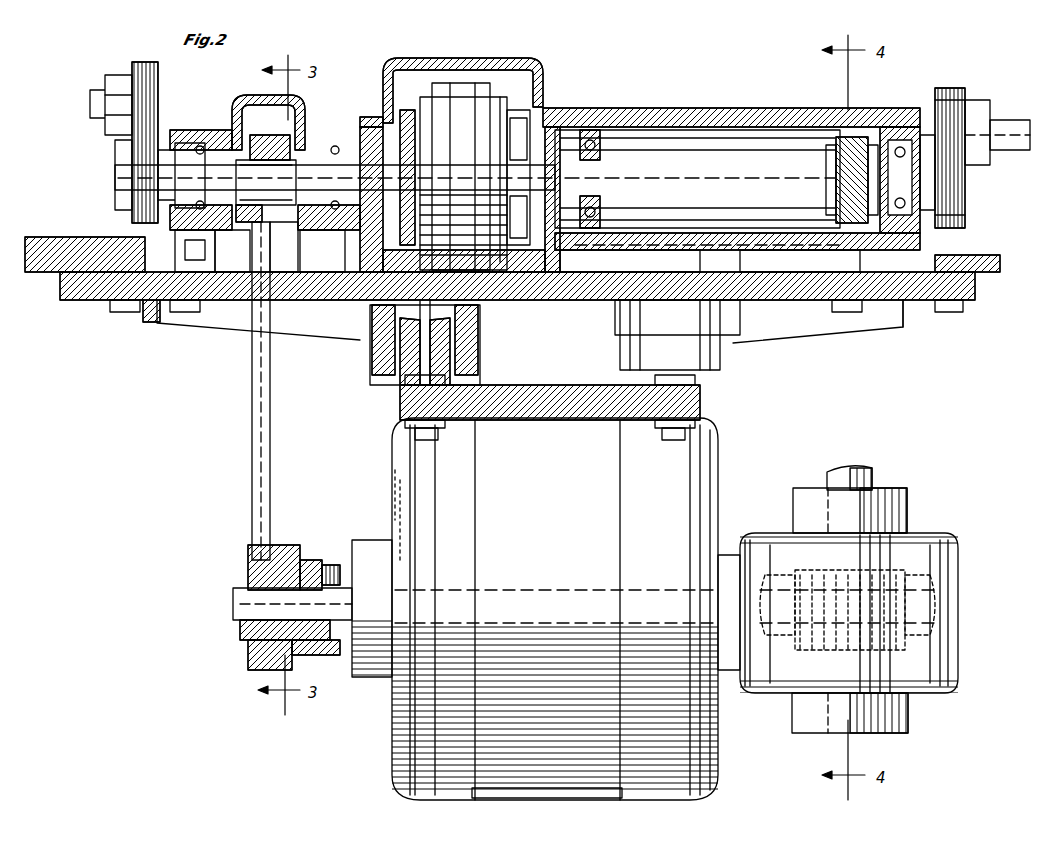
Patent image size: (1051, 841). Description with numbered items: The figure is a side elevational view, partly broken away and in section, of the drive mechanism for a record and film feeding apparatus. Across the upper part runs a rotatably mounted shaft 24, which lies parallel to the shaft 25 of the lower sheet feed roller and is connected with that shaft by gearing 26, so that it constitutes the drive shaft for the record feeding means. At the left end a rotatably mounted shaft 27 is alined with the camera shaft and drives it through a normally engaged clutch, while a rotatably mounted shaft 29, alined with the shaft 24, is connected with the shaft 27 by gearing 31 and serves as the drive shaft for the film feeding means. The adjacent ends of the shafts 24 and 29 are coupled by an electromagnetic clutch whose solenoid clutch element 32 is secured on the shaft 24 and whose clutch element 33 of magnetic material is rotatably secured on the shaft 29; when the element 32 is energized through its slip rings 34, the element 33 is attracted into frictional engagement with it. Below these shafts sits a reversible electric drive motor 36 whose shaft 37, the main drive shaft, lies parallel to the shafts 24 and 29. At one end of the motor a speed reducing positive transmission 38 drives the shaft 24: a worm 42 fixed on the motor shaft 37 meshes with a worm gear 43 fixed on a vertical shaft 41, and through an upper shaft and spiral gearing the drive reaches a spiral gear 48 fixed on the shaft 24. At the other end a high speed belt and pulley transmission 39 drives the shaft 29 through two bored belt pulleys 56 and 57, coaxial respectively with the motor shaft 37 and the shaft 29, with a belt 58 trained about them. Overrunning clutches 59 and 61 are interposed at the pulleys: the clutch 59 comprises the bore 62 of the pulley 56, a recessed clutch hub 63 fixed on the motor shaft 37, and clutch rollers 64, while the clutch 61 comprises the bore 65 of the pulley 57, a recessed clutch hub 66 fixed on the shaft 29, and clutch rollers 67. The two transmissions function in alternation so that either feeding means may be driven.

The shaft 24 is at (693, 163).
The shaft of the lower sheet feed roller 25 is at (1000, 128).
The gearing 26 is at (968, 182).
The shaft 27 is at (92, 100).
The shaft 29 is at (168, 195).
The gearing 31 is at (158, 112).
The solenoid clutch element 32 is at (495, 115).
The clutch element 33 is at (402, 116).
The slip rings 34 is at (476, 117).
The reversible electric drive motor 36 is at (405, 488).
The motor shaft 37 is at (238, 604).
The speed reducing positive transmission 38 is at (825, 472).
The high speed belt and pulley transmission 39 is at (250, 403).
The vertical shaft 41 is at (875, 490).
The worm 42 is at (812, 572).
The worm gear 43 is at (790, 630).
The spiral gear 48 is at (838, 221).
The belt pulley 56 is at (250, 652).
The belt pulley 57 is at (250, 236).
The belt 58 is at (262, 440).
The overrunning clutch 59 is at (285, 562).
The overrunning clutch 61 is at (283, 222).
The bore 62 is at (293, 648).
The recessed clutch hub 63 is at (280, 622).
The clutch rollers 64 is at (302, 572).
The bore 65 is at (245, 140).
The recessed clutch hub 66 is at (247, 217).
The clutch rollers 67 is at (258, 200).